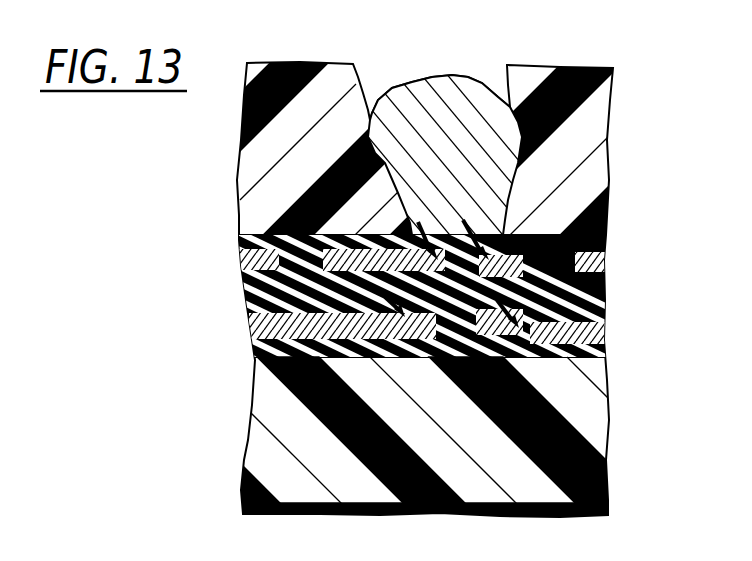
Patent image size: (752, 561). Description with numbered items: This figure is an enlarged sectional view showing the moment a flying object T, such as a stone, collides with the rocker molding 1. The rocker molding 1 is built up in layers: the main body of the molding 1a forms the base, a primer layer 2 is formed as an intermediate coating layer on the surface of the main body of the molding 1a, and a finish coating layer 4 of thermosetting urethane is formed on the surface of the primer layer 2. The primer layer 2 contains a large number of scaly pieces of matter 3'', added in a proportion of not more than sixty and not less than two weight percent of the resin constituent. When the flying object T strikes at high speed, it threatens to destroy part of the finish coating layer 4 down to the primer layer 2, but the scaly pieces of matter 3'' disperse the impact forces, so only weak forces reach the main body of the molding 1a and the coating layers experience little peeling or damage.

The rocker molding 1 is at (226, 364).
The main body of the molding 1a is at (248, 457).
The primer layer 2 is at (238, 247).
The scaly pieces of matter 3'' is at (398, 310).
The finish coating layer 4 is at (241, 178).
The flying object T is at (421, 90).